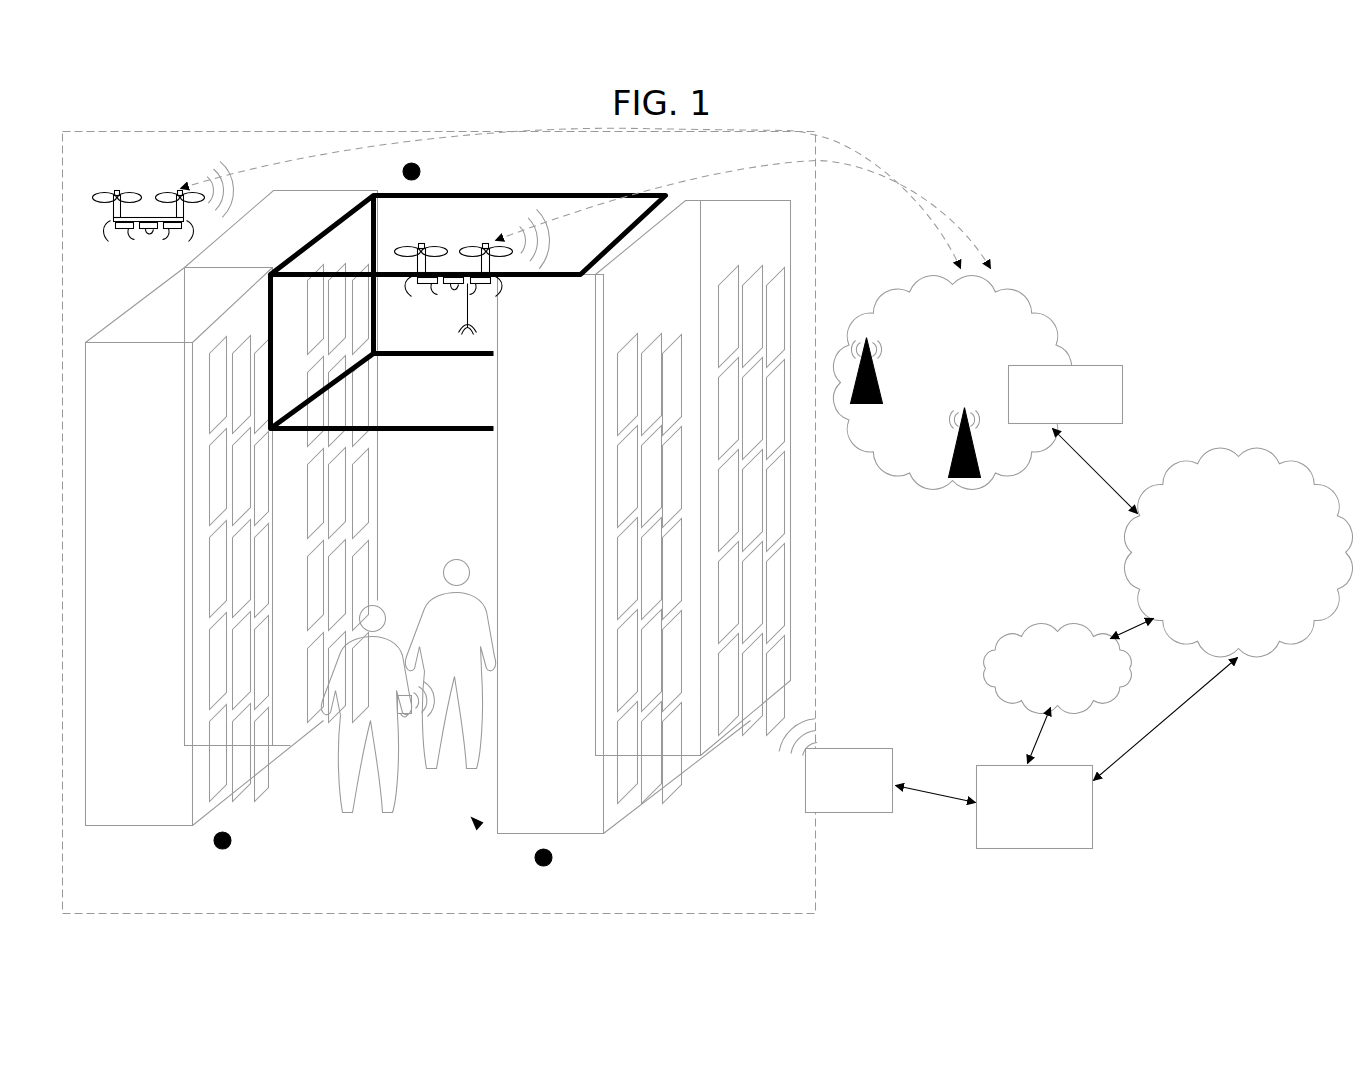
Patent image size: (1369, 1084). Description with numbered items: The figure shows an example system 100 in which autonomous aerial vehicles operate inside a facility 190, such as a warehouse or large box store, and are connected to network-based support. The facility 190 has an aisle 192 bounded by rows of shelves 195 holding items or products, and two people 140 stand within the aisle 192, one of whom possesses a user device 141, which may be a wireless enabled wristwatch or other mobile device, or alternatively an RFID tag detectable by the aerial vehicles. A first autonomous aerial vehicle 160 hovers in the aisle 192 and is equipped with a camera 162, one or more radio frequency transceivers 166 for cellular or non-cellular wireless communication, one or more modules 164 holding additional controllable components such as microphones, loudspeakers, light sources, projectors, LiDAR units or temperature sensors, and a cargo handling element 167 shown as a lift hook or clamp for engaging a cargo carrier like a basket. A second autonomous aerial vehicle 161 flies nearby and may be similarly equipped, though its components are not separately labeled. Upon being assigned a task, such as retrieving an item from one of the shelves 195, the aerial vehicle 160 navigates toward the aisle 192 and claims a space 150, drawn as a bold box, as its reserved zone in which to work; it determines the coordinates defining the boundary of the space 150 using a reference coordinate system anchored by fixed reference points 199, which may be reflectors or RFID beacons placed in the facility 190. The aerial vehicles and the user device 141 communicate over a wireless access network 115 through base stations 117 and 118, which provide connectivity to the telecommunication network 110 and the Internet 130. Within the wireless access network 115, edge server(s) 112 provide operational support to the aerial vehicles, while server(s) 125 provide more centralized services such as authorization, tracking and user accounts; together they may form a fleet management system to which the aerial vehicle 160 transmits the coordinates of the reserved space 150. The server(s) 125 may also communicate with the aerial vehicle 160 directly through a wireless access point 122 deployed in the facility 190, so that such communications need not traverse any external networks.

The system 100 is at (196, 118).
The telecommunication network 110 is at (1218, 544).
The server(s) 112 is at (1051, 417).
The wireless access network 115 is at (942, 365).
The base station 117 is at (876, 412).
The base station 118 is at (980, 478).
The wireless access point 122 is at (833, 791).
The server(s) 125 is at (1035, 807).
The Internet 130 is at (1043, 686).
The people 140 is at (426, 762).
The user device 141 is at (398, 702).
The space 150 is at (436, 400).
The autonomous aerial vehicle 160 is at (467, 248).
The autonomous aerial vehicle 161 is at (108, 203).
The camera 162 is at (449, 284).
The module(s) 164 is at (424, 283).
The radio frequency transceivers 166 is at (482, 284).
The cargo handling element 167 is at (475, 327).
The facility 190 is at (690, 877).
The aisle 192 is at (478, 826).
The shelves 195 is at (380, 540).
The fixed reference points 199 is at (410, 162).